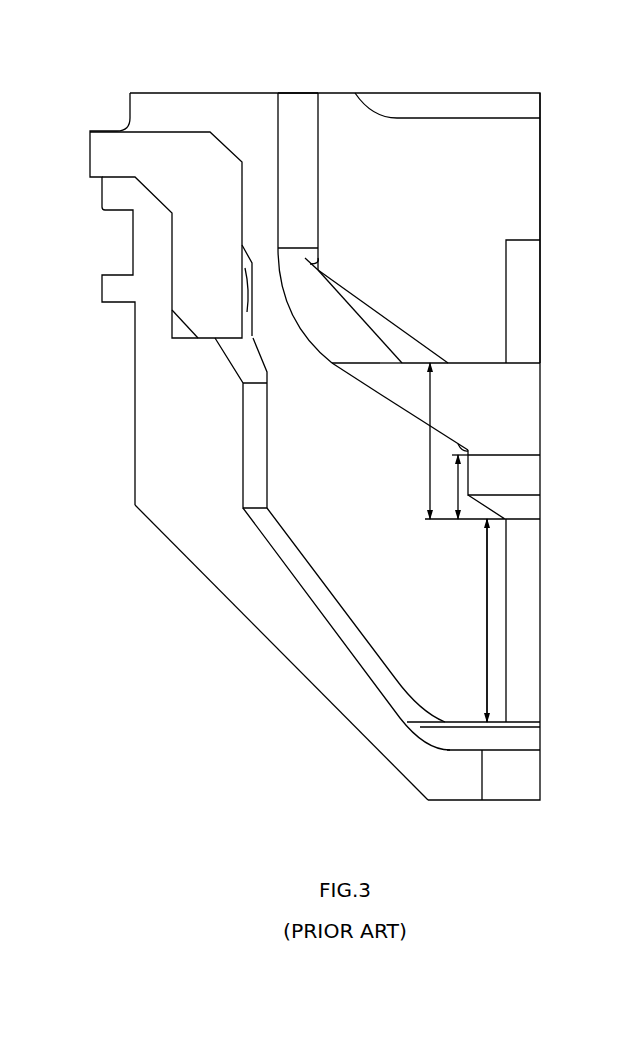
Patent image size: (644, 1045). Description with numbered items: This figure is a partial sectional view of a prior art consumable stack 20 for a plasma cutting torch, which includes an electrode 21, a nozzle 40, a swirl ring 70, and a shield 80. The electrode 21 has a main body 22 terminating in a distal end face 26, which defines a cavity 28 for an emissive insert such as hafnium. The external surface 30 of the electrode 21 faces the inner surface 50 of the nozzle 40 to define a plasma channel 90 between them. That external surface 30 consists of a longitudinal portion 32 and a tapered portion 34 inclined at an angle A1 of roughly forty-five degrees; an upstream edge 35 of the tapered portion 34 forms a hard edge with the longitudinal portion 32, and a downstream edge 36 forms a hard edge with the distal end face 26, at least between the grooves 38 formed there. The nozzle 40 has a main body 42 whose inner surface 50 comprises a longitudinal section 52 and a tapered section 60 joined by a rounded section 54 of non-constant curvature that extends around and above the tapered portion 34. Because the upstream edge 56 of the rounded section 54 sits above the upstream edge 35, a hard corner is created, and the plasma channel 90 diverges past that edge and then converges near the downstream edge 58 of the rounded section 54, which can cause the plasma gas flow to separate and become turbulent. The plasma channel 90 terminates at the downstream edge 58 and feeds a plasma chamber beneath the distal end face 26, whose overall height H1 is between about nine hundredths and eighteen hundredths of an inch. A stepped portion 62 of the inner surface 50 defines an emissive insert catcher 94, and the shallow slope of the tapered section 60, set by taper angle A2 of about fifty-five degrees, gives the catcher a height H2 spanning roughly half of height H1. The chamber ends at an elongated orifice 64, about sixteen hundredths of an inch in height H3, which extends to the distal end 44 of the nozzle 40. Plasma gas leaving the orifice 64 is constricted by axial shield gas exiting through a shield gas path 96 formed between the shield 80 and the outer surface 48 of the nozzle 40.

The consumable stack 20 is at (277, 713).
The electrode 21 is at (516, 148).
The main body 22 is at (426, 201).
The distal end face 26 is at (491, 367).
The cavity 28 is at (541, 274).
The external surface 30 is at (315, 97).
The longitudinal portion 32 is at (324, 119).
The tapered portion 34 is at (341, 292).
The upstream edge 35 is at (305, 282).
The downstream edge 36 is at (400, 366).
The grooves 38 is at (416, 344).
The nozzle 40 is at (365, 588).
The main body 42 is at (351, 508).
The distal end 44 is at (460, 728).
The outer surface 48 is at (277, 523).
The inner surface 50 is at (346, 346).
The longitudinal section 52 is at (276, 152).
The rounded section 54 is at (292, 328).
The upstream edge 56 is at (272, 253).
The downstream edge 58 is at (322, 362).
The tapered section 60 is at (346, 377).
The stepped portion 62 is at (478, 511).
The orifice 64 is at (518, 636).
The swirl ring 70 is at (114, 154).
The shield 80 is at (190, 507).
The plasma channel 90 is at (294, 116).
The emissive insert catcher 94 is at (536, 479).
The shield gas path 96 is at (370, 667).
The angle A1 is at (310, 250).
The taper angle A2 is at (478, 448).
The overall height H1 is at (418, 441).
The height H2 is at (450, 487).
The height H3 is at (470, 620).